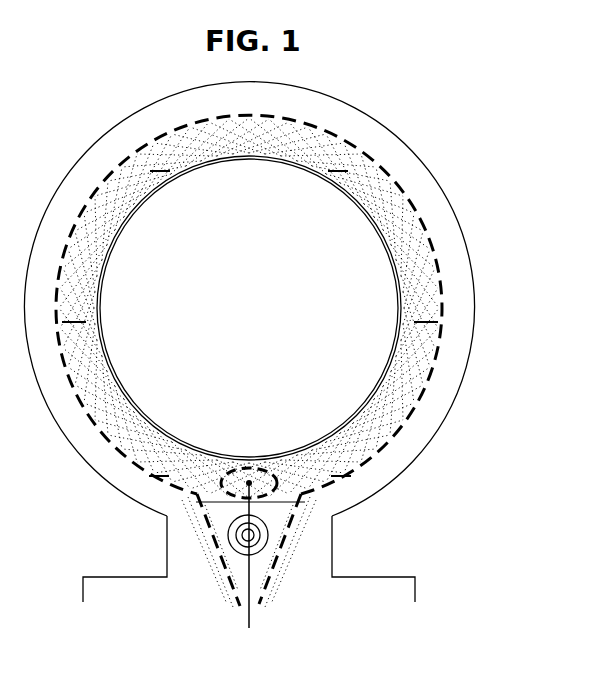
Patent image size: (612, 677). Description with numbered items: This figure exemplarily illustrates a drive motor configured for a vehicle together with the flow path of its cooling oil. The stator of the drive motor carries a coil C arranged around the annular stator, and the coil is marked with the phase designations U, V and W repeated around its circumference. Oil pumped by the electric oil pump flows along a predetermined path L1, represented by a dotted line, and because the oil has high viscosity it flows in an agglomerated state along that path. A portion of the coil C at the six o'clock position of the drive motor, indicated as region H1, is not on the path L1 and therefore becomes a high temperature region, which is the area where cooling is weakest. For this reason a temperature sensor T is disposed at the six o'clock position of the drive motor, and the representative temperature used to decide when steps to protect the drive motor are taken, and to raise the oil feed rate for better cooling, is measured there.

The coil C is at (370, 177).
The high temperature region H1 is at (242, 472).
The temperature sensor T is at (248, 566).
The predetermined path L1 is at (249, 564).
The U-phase coil U is at (247, 312).
The V-phase coil V is at (247, 312).
The W-phase coil W is at (250, 222).